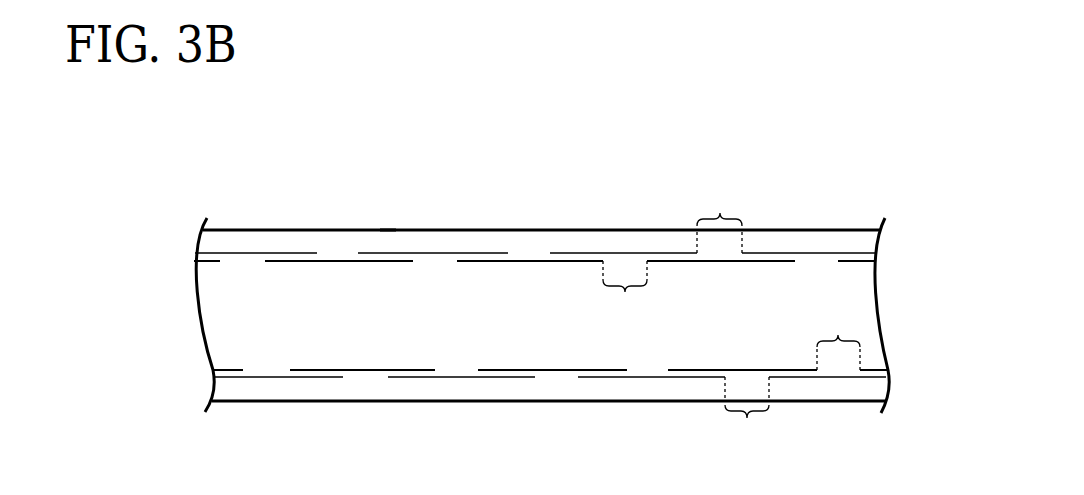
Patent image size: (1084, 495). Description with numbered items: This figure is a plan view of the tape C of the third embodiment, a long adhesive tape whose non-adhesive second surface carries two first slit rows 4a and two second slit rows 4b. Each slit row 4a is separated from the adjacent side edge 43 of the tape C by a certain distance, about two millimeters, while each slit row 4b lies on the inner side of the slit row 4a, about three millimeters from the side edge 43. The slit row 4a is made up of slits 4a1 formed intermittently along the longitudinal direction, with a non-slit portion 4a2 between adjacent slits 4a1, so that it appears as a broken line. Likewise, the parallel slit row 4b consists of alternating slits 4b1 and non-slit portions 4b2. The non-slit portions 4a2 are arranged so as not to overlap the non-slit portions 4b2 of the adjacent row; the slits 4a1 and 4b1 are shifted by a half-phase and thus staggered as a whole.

The side edge 43 is at (604, 229).
The tape C is at (388, 229).
The first slit row 4a is at (507, 316).
The slit 4a1 is at (488, 252).
The non-slit portion 4a2 is at (733, 316).
The second slit row 4b is at (508, 279).
The slit 4b1 is at (533, 259).
The non-slit portion 4b2 is at (731, 315).